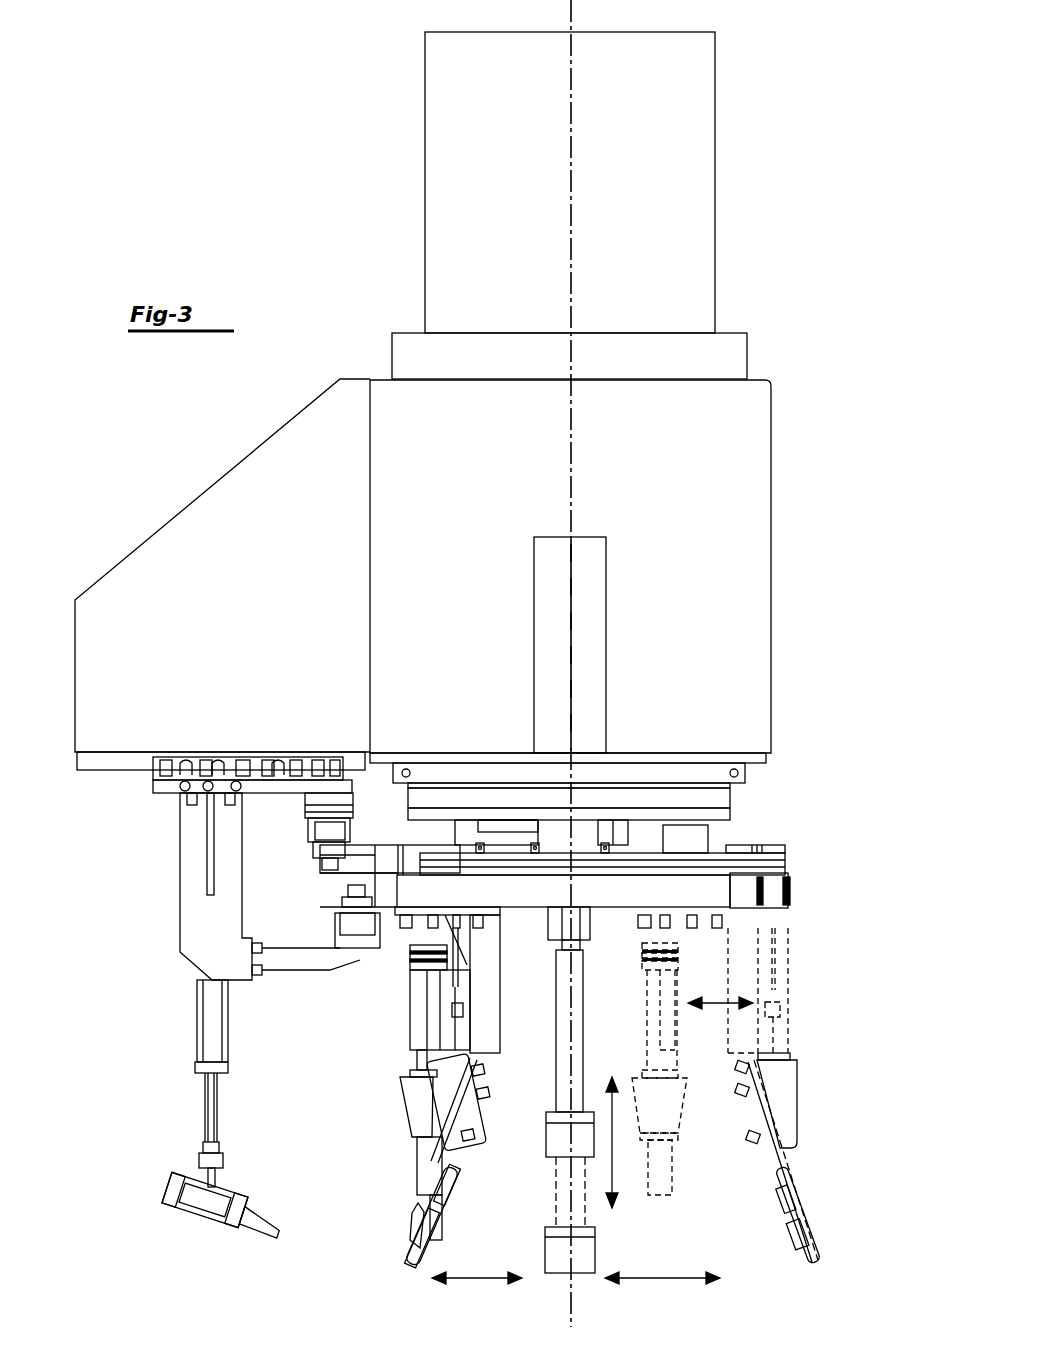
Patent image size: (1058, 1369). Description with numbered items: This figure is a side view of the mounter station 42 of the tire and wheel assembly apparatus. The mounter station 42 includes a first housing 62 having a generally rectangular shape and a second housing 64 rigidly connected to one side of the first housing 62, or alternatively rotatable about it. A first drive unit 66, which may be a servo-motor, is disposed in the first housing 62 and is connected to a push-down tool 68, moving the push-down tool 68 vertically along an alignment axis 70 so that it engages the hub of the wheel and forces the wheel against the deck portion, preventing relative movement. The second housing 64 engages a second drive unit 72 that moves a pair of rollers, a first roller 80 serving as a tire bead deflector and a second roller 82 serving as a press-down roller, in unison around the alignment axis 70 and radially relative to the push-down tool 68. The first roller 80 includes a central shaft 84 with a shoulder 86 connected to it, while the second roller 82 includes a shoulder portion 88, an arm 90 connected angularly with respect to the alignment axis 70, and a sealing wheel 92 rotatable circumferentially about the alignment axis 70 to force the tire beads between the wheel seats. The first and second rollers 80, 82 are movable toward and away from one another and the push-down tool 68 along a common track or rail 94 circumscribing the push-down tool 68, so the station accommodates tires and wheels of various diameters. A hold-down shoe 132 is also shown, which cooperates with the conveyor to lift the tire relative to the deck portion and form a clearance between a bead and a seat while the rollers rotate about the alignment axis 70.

The mounter station 42 is at (214, 137).
The first housing 62 is at (733, 480).
The second housing 64 is at (203, 527).
The first drive unit 66 is at (555, 595).
The alignment axis 70 is at (572, 628).
The second drive unit 72 is at (193, 852).
The hold-down shoe 132 is at (200, 1030).
The push-down tool 68 is at (556, 1070).
The common track or rail 94 is at (521, 905).
The first roller 80 is at (410, 1013).
The central shaft 84 is at (418, 1035).
The shoulder 86 is at (418, 1103).
The shoulder portion 88 is at (452, 1010).
The second roller 82 is at (450, 1103).
The arm 90 is at (452, 1173).
The sealing wheel 92 is at (418, 1260).